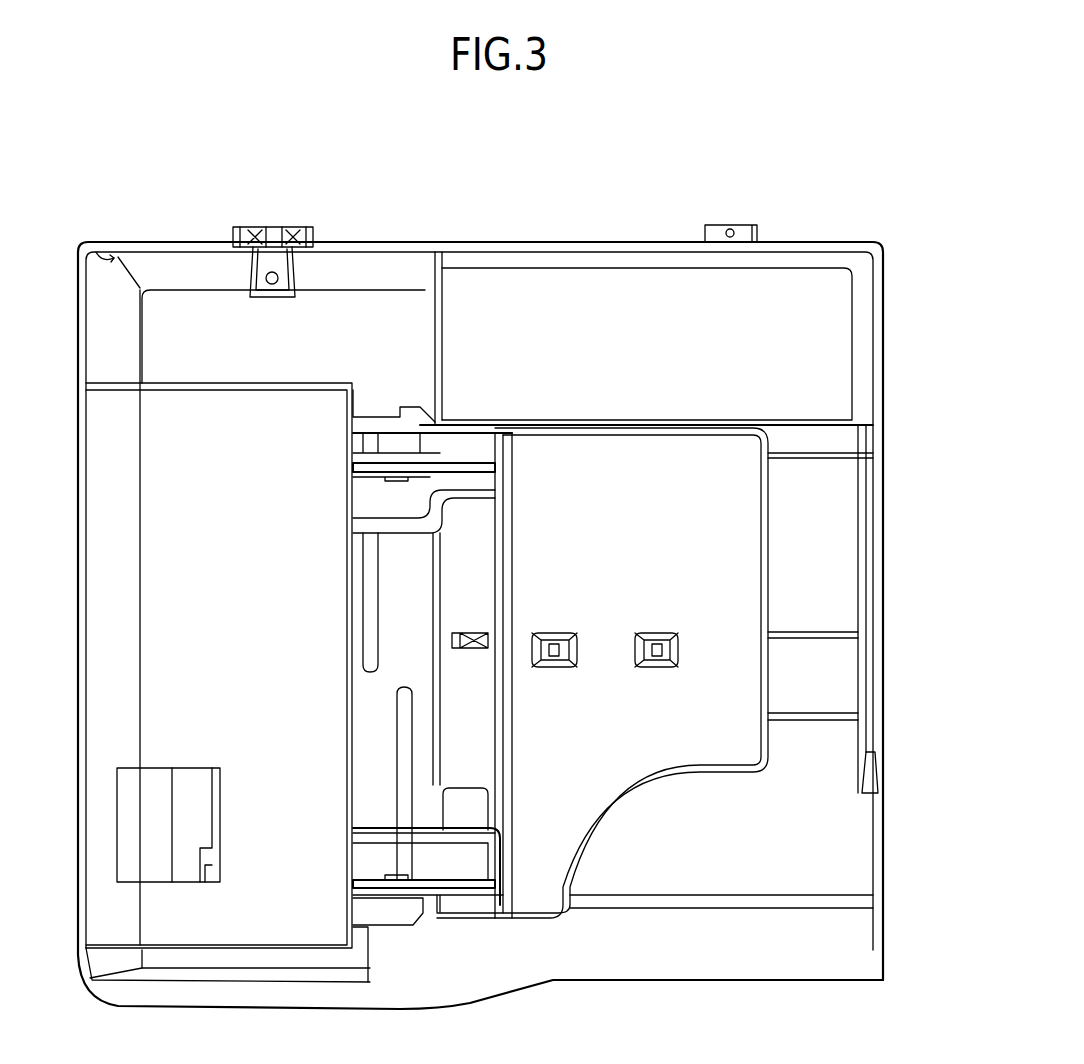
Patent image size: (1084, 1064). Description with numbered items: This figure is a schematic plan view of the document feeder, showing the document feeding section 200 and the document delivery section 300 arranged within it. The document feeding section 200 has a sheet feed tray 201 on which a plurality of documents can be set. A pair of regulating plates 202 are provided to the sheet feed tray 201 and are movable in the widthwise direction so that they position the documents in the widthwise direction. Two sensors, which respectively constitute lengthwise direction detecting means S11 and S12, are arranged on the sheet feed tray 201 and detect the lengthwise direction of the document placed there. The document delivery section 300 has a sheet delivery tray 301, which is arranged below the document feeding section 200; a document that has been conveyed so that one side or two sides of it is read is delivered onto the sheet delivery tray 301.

The document feeding section 200 is at (678, 789).
The sheet feed tray 201 is at (757, 770).
The regulating plates 202 is at (472, 465).
The document delivery section 300 is at (832, 847).
The sheet delivery tray 301 is at (833, 775).
The lengthwise direction detecting means S11 is at (556, 658).
The lengthwise direction detecting means S12 is at (657, 658).